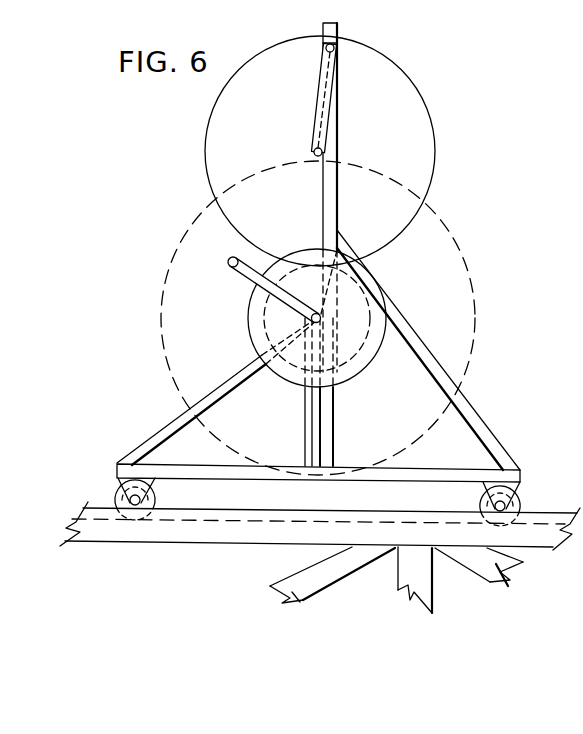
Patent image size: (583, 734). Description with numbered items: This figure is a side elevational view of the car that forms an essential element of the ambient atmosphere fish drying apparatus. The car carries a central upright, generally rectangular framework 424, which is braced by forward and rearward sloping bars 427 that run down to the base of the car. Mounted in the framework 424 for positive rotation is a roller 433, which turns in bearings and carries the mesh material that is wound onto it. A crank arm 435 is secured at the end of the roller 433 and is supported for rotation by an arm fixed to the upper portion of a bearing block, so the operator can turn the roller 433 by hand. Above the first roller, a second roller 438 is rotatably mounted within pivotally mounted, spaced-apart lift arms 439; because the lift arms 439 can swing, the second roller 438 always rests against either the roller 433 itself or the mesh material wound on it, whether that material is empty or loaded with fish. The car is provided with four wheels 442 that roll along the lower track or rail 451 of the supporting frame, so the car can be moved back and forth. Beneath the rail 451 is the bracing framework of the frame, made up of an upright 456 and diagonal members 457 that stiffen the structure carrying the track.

The central upright framework 424 is at (341, 148).
The sloping bars 427 is at (408, 315).
The roller 433 is at (368, 350).
The crank arm 435 is at (242, 273).
The second roller 438 is at (415, 88).
The lift arms 439 is at (315, 122).
The wheels 442 is at (118, 493).
The track or rail 451 is at (172, 530).
The upright 456 is at (397, 572).
The diagonal member 457 is at (295, 570).